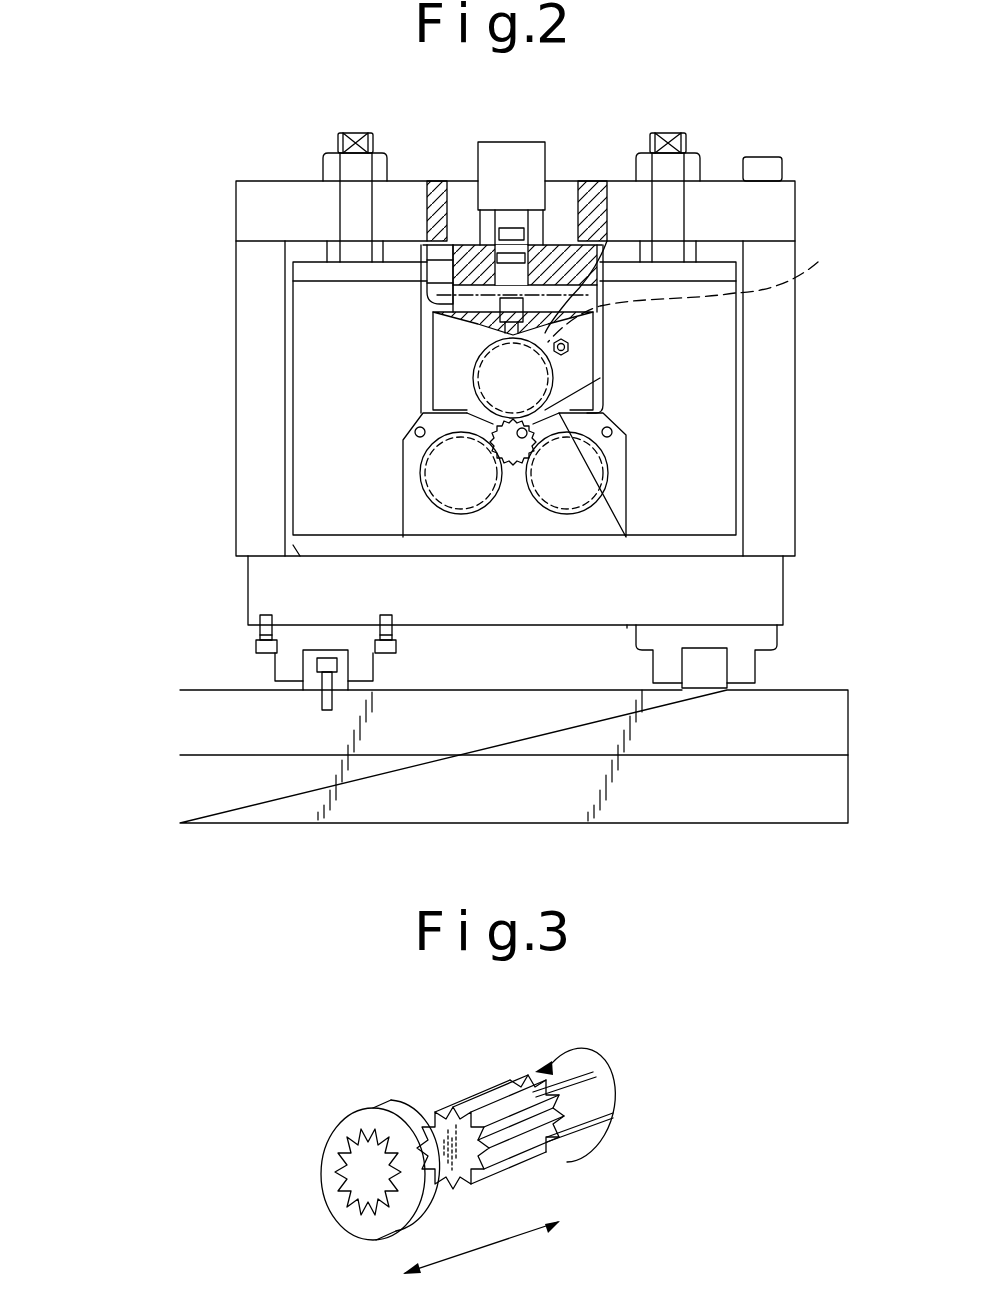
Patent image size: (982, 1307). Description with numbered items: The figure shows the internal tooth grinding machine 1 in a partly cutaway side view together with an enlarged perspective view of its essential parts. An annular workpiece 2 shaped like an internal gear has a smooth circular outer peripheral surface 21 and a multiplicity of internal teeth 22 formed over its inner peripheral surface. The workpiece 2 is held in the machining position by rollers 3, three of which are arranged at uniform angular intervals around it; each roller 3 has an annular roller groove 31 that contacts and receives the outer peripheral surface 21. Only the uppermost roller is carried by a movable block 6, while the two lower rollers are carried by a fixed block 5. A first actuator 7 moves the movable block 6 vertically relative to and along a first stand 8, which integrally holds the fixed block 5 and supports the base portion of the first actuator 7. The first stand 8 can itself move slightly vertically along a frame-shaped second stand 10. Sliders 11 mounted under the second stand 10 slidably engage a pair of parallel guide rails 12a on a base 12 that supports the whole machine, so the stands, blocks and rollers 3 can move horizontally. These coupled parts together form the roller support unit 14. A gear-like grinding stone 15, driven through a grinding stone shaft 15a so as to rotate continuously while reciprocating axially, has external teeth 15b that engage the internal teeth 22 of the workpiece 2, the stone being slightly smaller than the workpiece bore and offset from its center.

In FIG. 2, the internal tooth grinding machine 1 is at (208, 160).
In FIG. 2, the annular workpiece 2 is at (556, 408).
In FIG. 3, the annular workpiece 2 is at (360, 1090).
In FIG. 2, the rollers 3 is at (556, 365).
In FIG. 2, the fixed block 5 is at (416, 515).
In FIG. 2, the movable block 6 is at (446, 368).
In FIG. 2, the first actuator 7 is at (528, 165).
In FIG. 2, the first stand 8 is at (336, 330).
In FIG. 2, the second stand 10 is at (252, 266).
In FIG. 2, the sliders 11 is at (294, 661).
In FIG. 2, the base 12 is at (212, 723).
In FIG. 2, the guide rails 12a is at (340, 672).
In FIG. 2, the roller support unit 14 is at (432, 145).
In FIG. 3, the grinding stone 15 is at (470, 1078).
In FIG. 3, the grinding stone shaft 15a is at (573, 1117).
In FIG. 3, the external teeth 15b is at (510, 1106).
In FIG. 2, the outer peripheral surface 21 is at (512, 482).
In FIG. 3, the outer peripheral surface 21 is at (400, 1128).
In FIG. 2, the internal teeth 22 is at (546, 436).
In FIG. 3, the internal teeth 22 is at (340, 1147).
In FIG. 2, the annular roller groove 31 is at (701, 288).